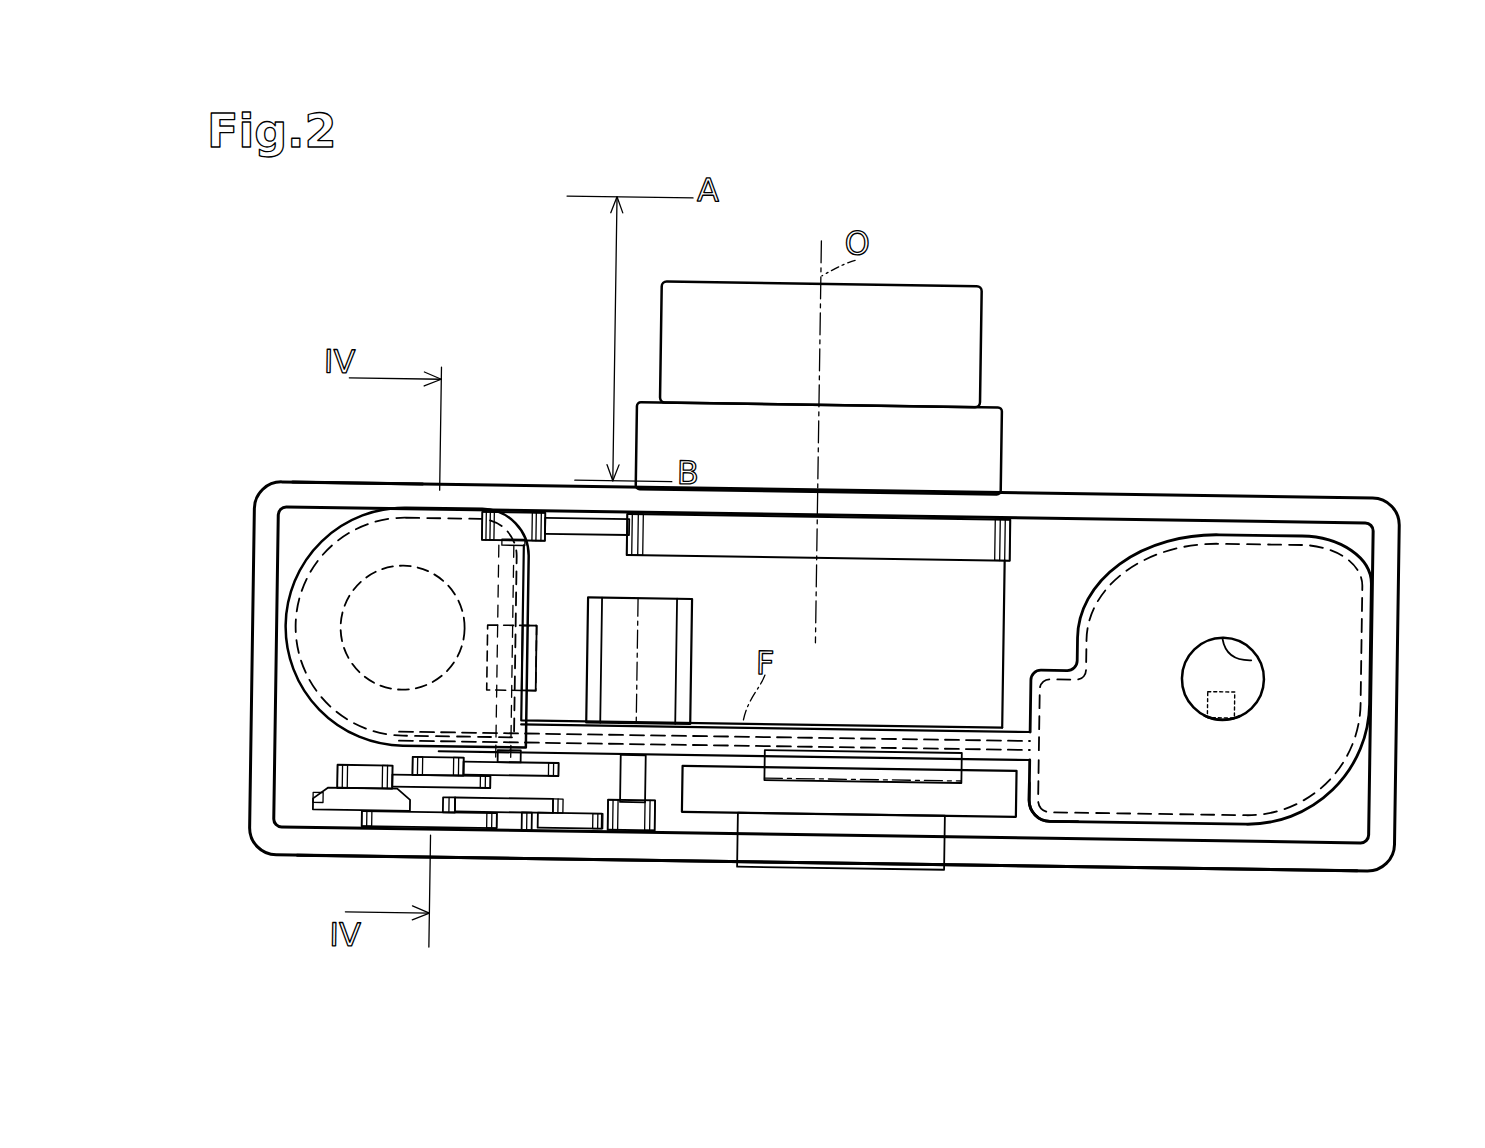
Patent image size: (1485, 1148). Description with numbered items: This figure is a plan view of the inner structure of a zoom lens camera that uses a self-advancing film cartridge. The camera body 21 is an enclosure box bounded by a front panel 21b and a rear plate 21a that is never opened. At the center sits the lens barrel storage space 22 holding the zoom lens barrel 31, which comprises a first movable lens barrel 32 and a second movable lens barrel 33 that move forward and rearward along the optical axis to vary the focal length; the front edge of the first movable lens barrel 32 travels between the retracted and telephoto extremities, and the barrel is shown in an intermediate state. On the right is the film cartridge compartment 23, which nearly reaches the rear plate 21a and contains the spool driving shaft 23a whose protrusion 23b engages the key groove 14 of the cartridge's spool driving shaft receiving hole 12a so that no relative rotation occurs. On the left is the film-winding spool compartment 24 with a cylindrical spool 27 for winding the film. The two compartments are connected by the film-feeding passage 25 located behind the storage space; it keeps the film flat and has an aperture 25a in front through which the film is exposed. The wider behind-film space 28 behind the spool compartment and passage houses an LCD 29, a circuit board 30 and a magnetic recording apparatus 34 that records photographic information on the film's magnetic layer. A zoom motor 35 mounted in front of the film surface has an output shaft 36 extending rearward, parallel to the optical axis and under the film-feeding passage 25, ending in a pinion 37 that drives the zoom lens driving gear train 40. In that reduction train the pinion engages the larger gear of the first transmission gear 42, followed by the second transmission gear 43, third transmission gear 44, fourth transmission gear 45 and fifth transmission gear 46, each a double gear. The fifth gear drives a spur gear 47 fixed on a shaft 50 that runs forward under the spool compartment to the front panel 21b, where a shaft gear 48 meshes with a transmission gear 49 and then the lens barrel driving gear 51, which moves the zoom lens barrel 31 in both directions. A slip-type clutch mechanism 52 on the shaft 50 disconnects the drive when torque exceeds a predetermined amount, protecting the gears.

The spool driving shaft receiving hole 12a is at (1247, 647).
The key groove 14 is at (1219, 712).
The camera body 21 is at (1188, 506).
The rear plate 21a is at (1293, 856).
The front panel 21b is at (302, 505).
The lens barrel storage space 22 is at (985, 612).
The film cartridge compartment 23 is at (1280, 526).
The spool driving shaft 23a is at (1242, 677).
The protrusion 23b is at (1218, 724).
The film-winding spool compartment 24 is at (341, 535).
The film-feeding passage 25 is at (848, 728).
The aperture 25a is at (935, 736).
The spool 27 is at (397, 606).
The behind-film space 28 is at (1031, 816).
The LCD 29 is at (837, 868).
The circuit board 30 is at (975, 800).
The zoom lens barrel 31 is at (871, 388).
The first movable lens barrel 32 is at (953, 373).
The second movable lens barrel 33 is at (848, 448).
The magnetic recording apparatus 34 is at (888, 773).
The zoom motor 35 is at (660, 681).
The output shaft 36 is at (642, 775).
The pinion 37 is at (637, 821).
The zoom lens driving gear train 40 is at (337, 822).
The first transmission gear 42 is at (575, 817).
The second transmission gear 43 is at (512, 817).
The third transmission gear 44 is at (442, 824).
The fourth transmission gear 45 is at (363, 787).
The fifth transmission gear 46 is at (440, 775).
The spur gear 47 is at (533, 768).
The shaft gear 48 is at (510, 530).
The transmission gear 49 is at (591, 532).
The shaft 50 is at (515, 568).
The lens barrel driving gear 51 is at (693, 543).
The clutch mechanism 52 is at (532, 658).